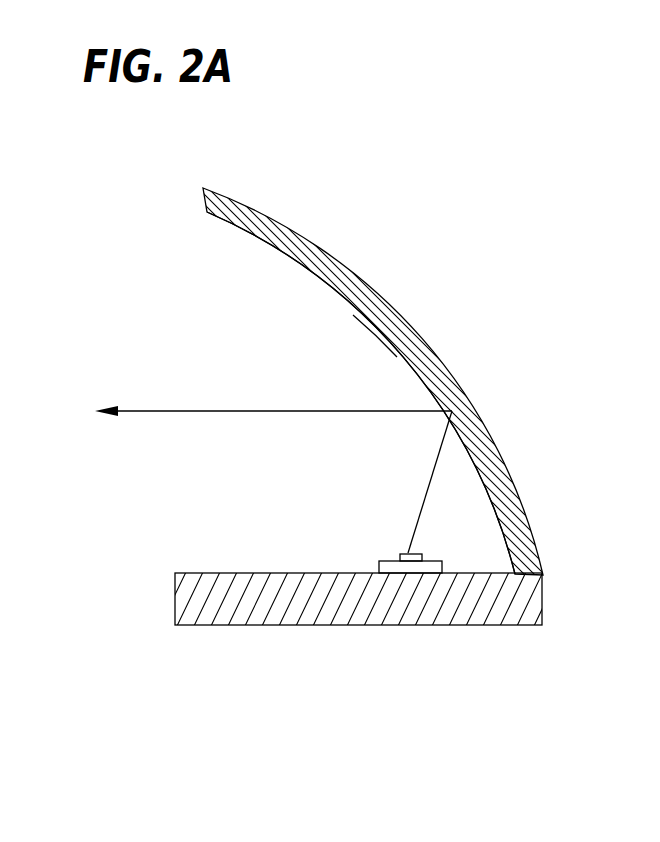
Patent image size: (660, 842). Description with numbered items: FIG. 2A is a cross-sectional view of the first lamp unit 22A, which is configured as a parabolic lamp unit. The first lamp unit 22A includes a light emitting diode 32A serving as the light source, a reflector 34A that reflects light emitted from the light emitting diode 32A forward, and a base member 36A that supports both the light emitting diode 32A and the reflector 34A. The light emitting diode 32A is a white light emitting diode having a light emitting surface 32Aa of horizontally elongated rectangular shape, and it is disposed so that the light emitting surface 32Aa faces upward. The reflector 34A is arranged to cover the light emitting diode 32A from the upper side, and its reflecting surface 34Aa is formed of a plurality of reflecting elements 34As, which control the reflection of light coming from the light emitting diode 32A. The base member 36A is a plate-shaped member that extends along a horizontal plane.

The first lamp unit 22A is at (470, 187).
The reflector 34A is at (445, 357).
The reflecting surface 34Aa is at (267, 254).
The reflecting elements 34As is at (397, 357).
The light emitting diode 32A is at (347, 512).
The light emitting surface 32Aa is at (406, 553).
The base member 36A is at (247, 630).